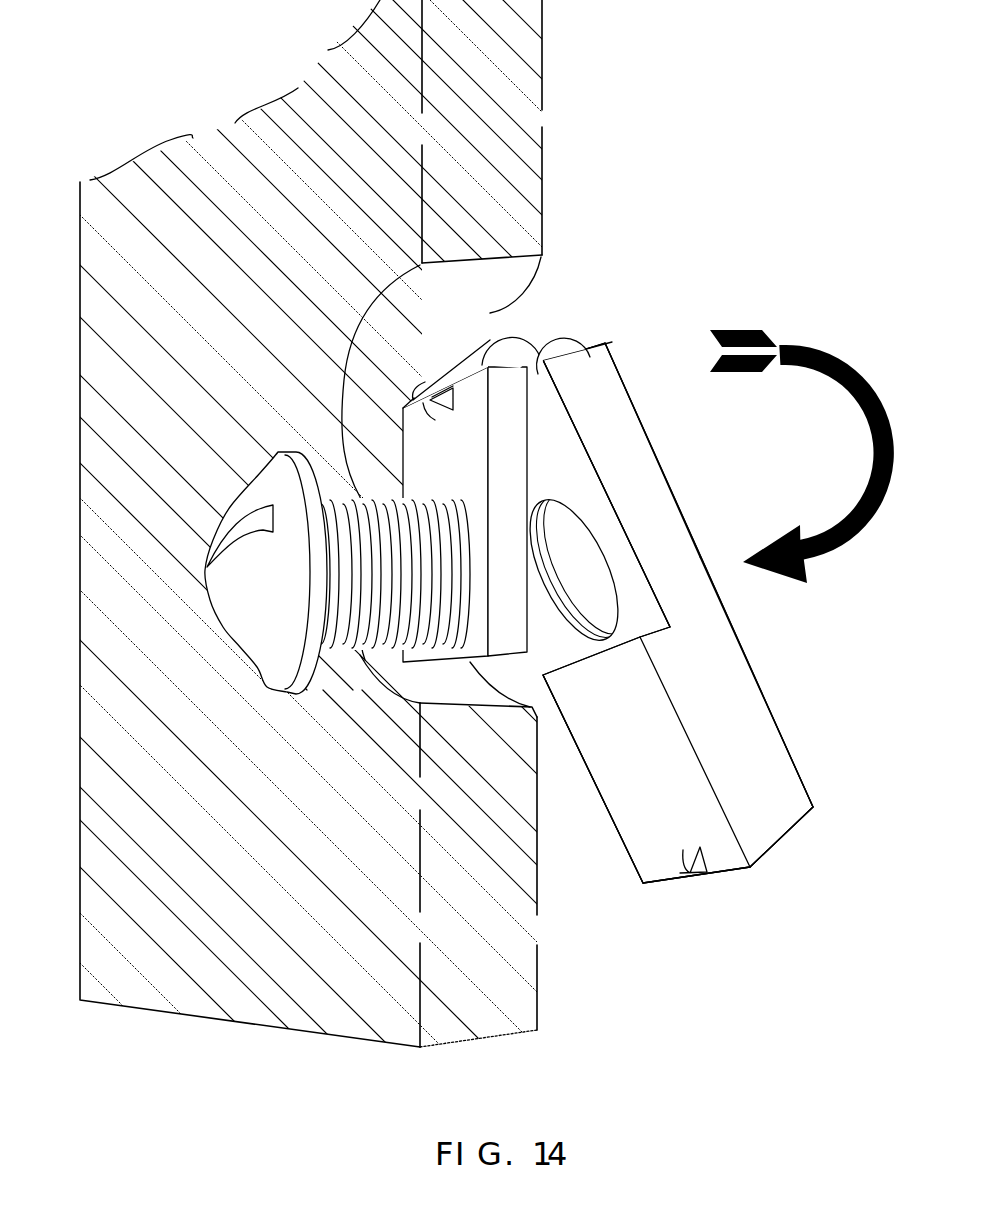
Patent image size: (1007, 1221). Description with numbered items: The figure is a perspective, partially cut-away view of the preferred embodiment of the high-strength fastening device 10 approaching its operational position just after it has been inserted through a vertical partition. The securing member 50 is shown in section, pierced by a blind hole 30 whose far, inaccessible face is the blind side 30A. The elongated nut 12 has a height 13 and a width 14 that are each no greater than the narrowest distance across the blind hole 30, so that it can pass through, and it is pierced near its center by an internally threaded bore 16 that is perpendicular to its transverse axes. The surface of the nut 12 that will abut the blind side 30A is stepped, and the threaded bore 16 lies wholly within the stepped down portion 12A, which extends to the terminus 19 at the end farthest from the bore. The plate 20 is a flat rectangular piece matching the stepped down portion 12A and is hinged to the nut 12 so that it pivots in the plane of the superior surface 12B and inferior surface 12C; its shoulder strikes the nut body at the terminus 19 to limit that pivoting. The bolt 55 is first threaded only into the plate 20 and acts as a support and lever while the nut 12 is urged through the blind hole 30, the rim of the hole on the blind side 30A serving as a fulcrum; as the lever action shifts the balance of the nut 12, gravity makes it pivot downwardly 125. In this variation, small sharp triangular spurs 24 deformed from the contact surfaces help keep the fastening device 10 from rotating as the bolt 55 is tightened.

The high-strength fastening device 10 is at (724, 653).
The elongated nut 12 is at (745, 734).
The stepped down portion 12A is at (575, 488).
The superior surface 12B is at (793, 751).
The inferior surface 12C is at (655, 833).
The height 13 is at (785, 838).
The width 14 is at (735, 873).
The internally threaded bore 16 is at (592, 548).
The terminus 19 is at (600, 346).
The plate 20 is at (502, 496).
The spurs 24 is at (456, 393).
The blind hole 30 is at (454, 498).
The blind side 30A is at (612, 100).
The securing member 50 is at (297, 83).
The fastening bolt 55 is at (215, 624).
The downward pivoting of the nut 125 is at (818, 356).